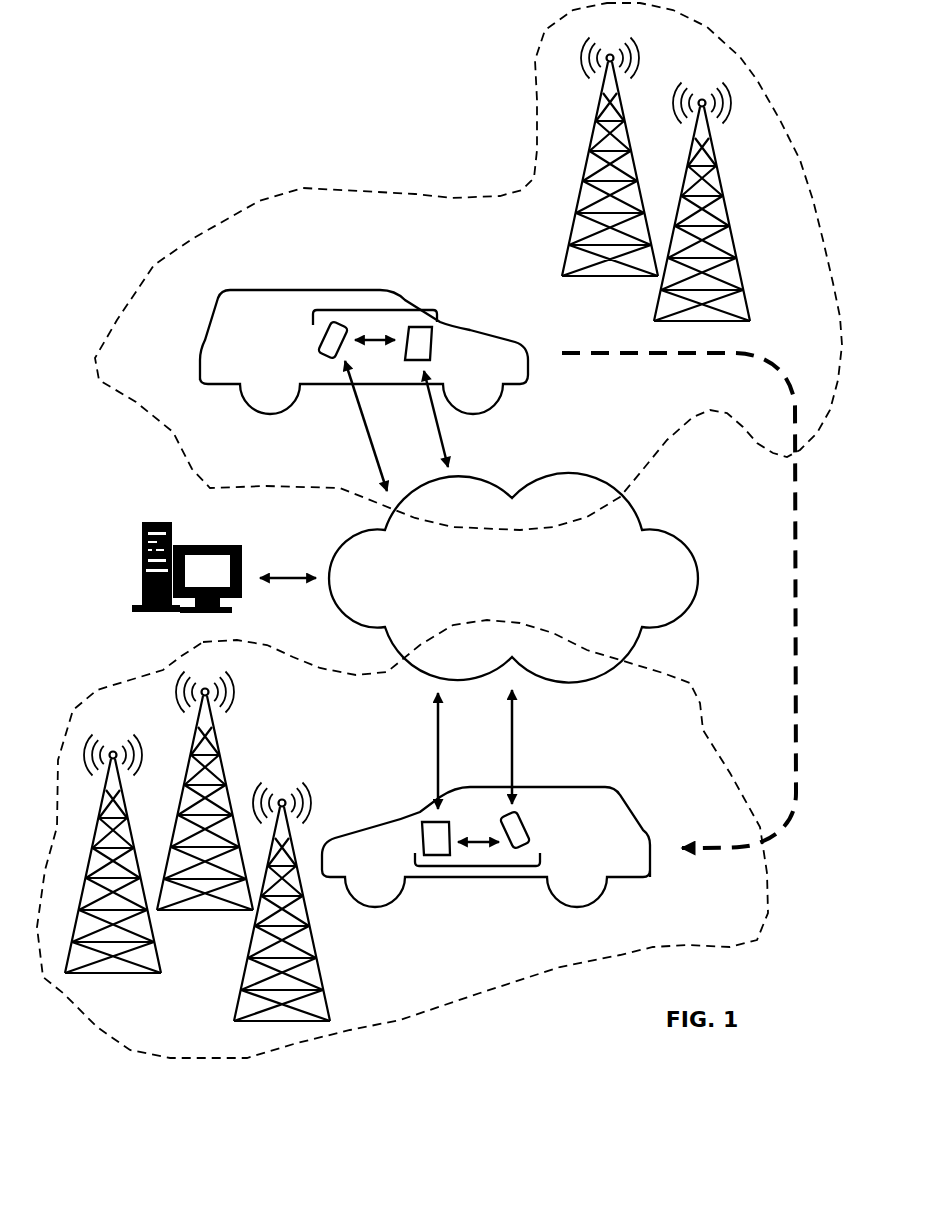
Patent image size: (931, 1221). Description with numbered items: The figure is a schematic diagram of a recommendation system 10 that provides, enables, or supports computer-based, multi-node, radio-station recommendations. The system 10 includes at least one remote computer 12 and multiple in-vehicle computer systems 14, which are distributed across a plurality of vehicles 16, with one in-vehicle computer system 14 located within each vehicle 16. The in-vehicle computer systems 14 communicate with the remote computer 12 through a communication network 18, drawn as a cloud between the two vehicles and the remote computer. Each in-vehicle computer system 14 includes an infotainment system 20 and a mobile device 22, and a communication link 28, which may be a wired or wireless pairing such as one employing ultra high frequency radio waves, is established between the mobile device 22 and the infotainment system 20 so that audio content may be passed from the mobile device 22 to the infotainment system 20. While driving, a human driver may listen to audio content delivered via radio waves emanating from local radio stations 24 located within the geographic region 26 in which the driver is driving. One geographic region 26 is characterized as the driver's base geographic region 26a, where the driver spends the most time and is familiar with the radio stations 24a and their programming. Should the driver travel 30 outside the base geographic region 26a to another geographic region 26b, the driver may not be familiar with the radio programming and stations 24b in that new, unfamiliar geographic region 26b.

The system 10 is at (202, 122).
The remote computer 12 is at (133, 503).
The in-vehicle computer system 14 is at (377, 310).
The vehicle 16 is at (270, 297).
The communication network 18 is at (500, 590).
The infotainment system 20 is at (429, 340).
The mobile device 22 is at (325, 352).
The local radio station 24 is at (736, 161).
The radio station 24a is at (737, 200).
The radio station 24b is at (296, 717).
The geographic region 26 is at (720, 41).
The base geographic region 26a is at (420, 193).
The geographic region 26b is at (268, 645).
The communication link 28 is at (381, 349).
The travel 30 is at (797, 604).